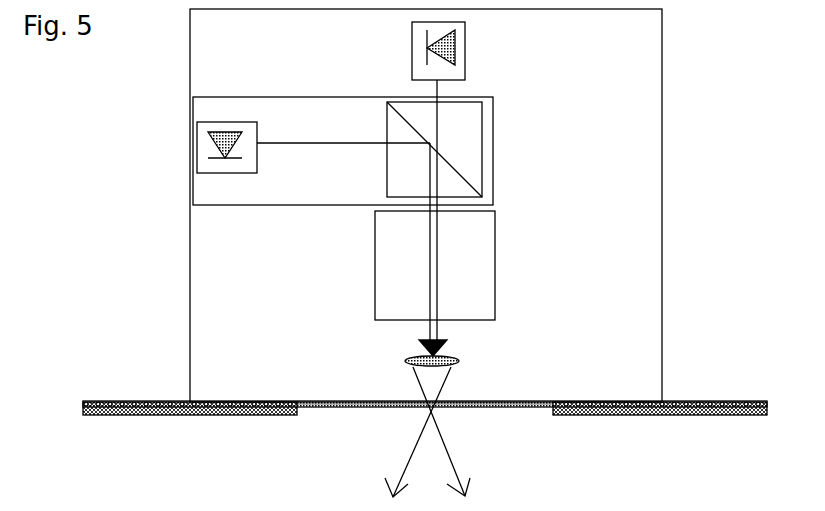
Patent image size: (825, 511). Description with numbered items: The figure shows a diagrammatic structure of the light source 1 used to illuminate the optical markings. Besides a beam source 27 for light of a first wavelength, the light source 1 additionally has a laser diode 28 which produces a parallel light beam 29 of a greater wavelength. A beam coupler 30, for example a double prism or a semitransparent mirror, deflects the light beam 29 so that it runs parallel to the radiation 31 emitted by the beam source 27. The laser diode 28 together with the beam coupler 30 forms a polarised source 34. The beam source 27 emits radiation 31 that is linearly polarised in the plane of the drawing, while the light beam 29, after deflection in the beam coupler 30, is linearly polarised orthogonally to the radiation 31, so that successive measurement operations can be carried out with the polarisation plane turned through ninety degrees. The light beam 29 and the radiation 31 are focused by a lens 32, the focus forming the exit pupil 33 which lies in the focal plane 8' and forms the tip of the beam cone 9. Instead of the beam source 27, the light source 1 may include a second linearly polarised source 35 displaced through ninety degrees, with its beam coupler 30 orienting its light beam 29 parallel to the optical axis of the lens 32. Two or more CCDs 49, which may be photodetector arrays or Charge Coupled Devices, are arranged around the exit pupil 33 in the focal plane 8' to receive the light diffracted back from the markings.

The light source 1 is at (662, 35).
The beam source 27 is at (465, 48).
The laser diode 28 is at (213, 173).
The light beam 29 is at (286, 150).
The beam coupler 30 is at (482, 150).
The radiation 31 is at (440, 90).
The lens 32 is at (459, 362).
The exit pupil 33 is at (438, 411).
The polarised source 34 is at (289, 97).
The second linearly polarised source 35 is at (495, 230).
The CCD 49 is at (200, 415).
The focal plane 8' is at (466, 425).
The beam cone 9 is at (455, 466).